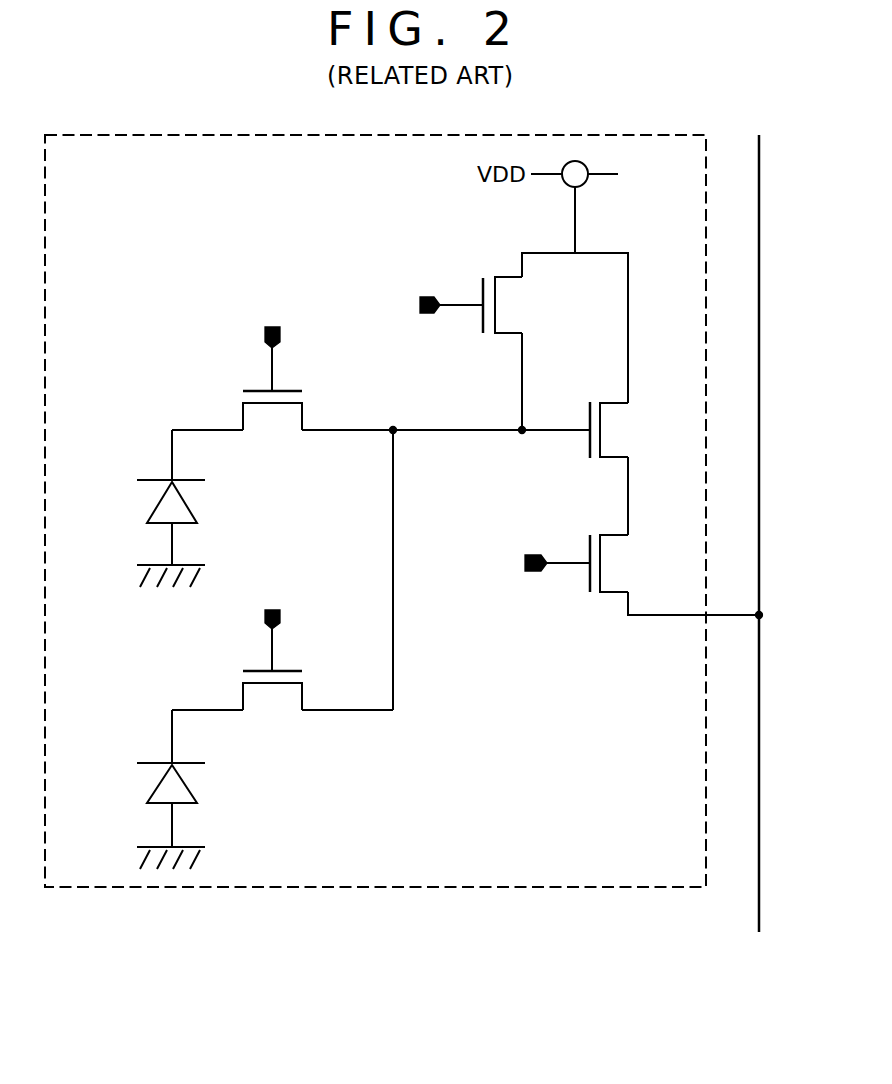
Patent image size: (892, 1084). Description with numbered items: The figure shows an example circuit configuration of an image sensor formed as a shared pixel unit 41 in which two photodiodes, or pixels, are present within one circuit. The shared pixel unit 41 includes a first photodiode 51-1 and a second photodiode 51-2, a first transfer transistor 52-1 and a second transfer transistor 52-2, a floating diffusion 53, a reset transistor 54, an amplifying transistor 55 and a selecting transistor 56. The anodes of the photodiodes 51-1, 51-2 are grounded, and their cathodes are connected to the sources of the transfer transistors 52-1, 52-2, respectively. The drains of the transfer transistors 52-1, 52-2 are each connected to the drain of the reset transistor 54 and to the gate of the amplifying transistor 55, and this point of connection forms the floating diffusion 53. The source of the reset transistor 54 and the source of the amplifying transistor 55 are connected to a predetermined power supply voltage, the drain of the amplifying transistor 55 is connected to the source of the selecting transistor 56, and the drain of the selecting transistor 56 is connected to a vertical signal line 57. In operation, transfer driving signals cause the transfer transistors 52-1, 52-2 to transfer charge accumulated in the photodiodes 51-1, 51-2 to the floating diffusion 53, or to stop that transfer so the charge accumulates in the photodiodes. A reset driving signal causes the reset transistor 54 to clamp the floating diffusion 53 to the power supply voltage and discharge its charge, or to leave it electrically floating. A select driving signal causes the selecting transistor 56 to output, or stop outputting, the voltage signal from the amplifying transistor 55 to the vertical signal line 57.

The shared pixel unit 41 is at (592, 888).
The photodiode 51-1 is at (155, 785).
The photodiode 51-2 is at (155, 505).
The transfer transistor 52-1 is at (243, 700).
The transfer transistor 52-2 is at (243, 420).
The floating diffusion 53 is at (418, 421).
The reset transistor 54 is at (508, 277).
The amplifying transistor 55 is at (617, 403).
The selecting transistor 56 is at (617, 535).
The vertical signal line 57 is at (760, 765).